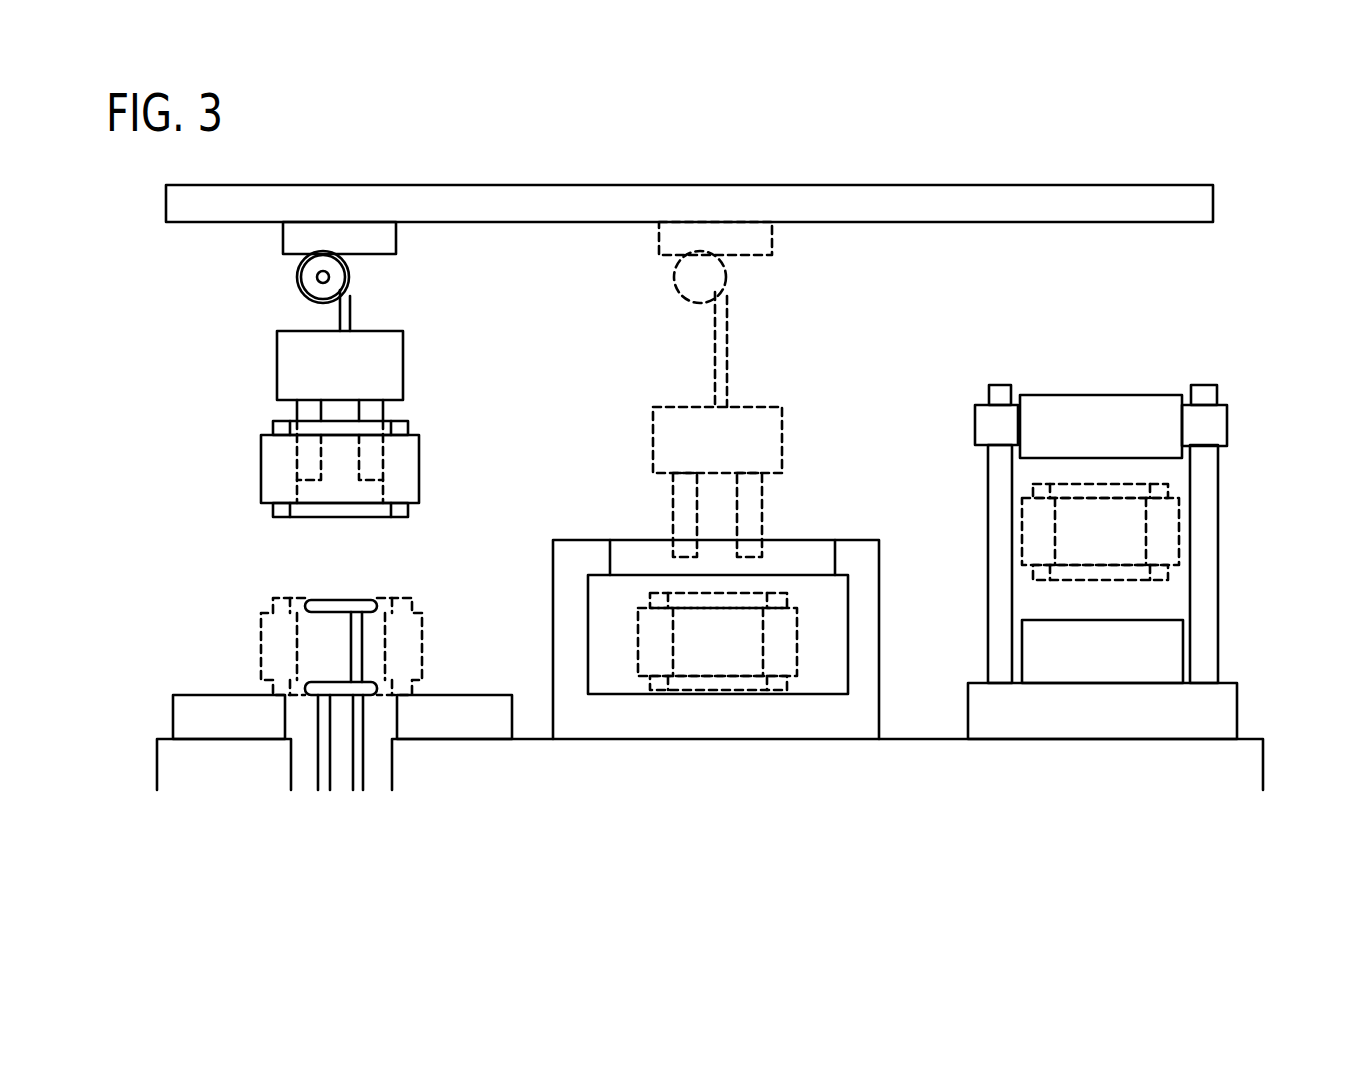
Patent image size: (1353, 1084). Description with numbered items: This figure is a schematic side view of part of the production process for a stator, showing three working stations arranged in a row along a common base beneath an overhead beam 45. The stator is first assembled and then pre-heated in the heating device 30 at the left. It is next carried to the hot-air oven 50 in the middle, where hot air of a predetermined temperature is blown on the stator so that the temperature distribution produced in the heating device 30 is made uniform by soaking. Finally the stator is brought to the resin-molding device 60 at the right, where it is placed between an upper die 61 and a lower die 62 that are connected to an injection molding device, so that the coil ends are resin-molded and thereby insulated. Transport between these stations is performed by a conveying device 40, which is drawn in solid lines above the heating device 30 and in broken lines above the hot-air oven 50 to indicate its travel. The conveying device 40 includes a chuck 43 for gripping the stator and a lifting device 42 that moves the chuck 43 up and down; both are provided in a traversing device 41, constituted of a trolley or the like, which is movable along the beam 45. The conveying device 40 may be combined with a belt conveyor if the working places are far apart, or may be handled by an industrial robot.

The heating device 30 is at (340, 786).
The conveying device 40 is at (316, 317).
The traversing device 41 is at (293, 237).
The lifting device 42 is at (305, 276).
The chuck 43 is at (300, 357).
The beam 45 is at (263, 208).
The hot-air oven 50 is at (713, 783).
The resin-molding device 60 is at (1147, 609).
The upper die 61 is at (1135, 418).
The lower die 62 is at (1168, 655).